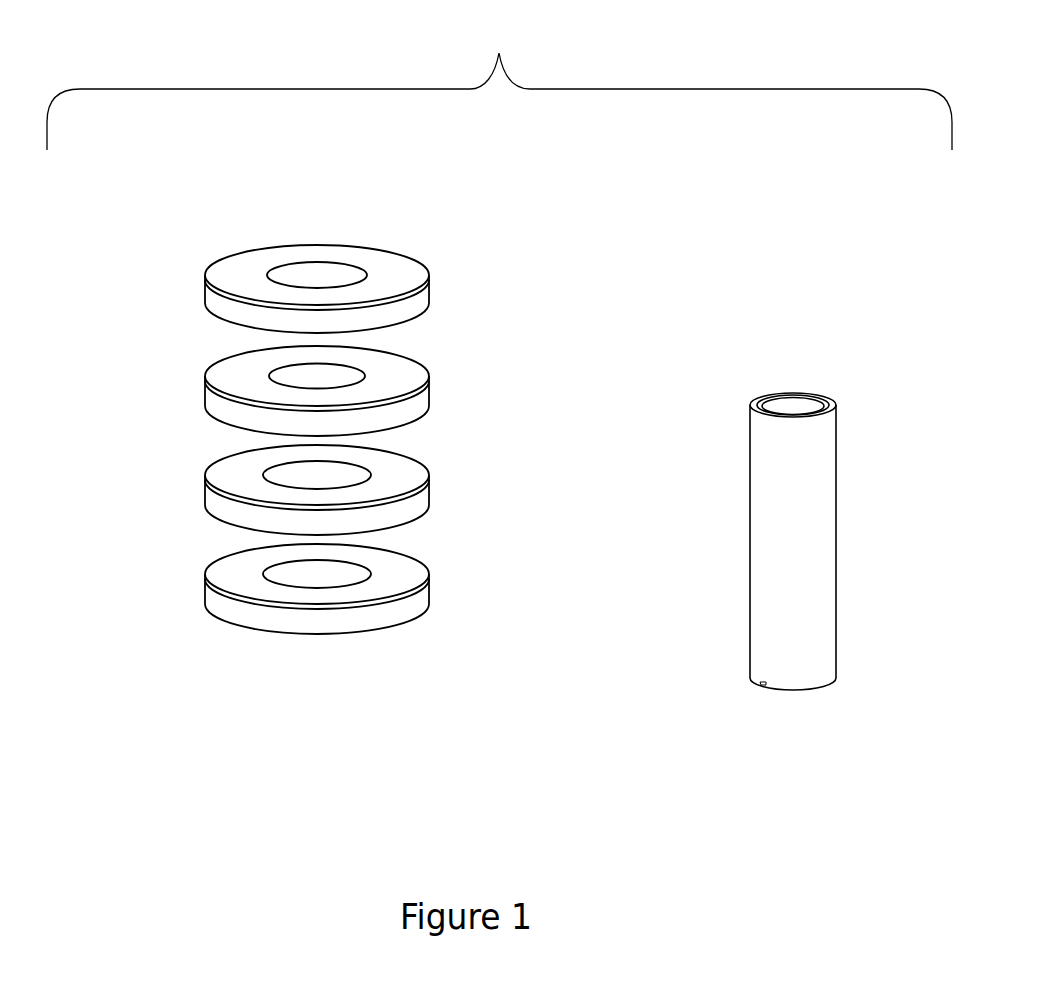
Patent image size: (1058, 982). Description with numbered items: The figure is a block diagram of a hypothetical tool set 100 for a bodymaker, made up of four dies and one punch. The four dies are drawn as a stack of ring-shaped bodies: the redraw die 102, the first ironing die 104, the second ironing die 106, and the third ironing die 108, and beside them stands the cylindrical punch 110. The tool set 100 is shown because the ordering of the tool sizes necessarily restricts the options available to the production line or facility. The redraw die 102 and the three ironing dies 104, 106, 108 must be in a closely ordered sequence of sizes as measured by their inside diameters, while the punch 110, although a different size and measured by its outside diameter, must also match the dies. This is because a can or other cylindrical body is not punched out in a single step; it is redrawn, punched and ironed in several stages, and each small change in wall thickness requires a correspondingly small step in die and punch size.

The tool set 100 is at (499, 82).
The redraw die 102 is at (345, 643).
The ironing die #1 104 is at (430, 492).
The ironing die #2 106 is at (430, 390).
The ironing die #3 108 is at (371, 244).
The punch 110 is at (807, 708).